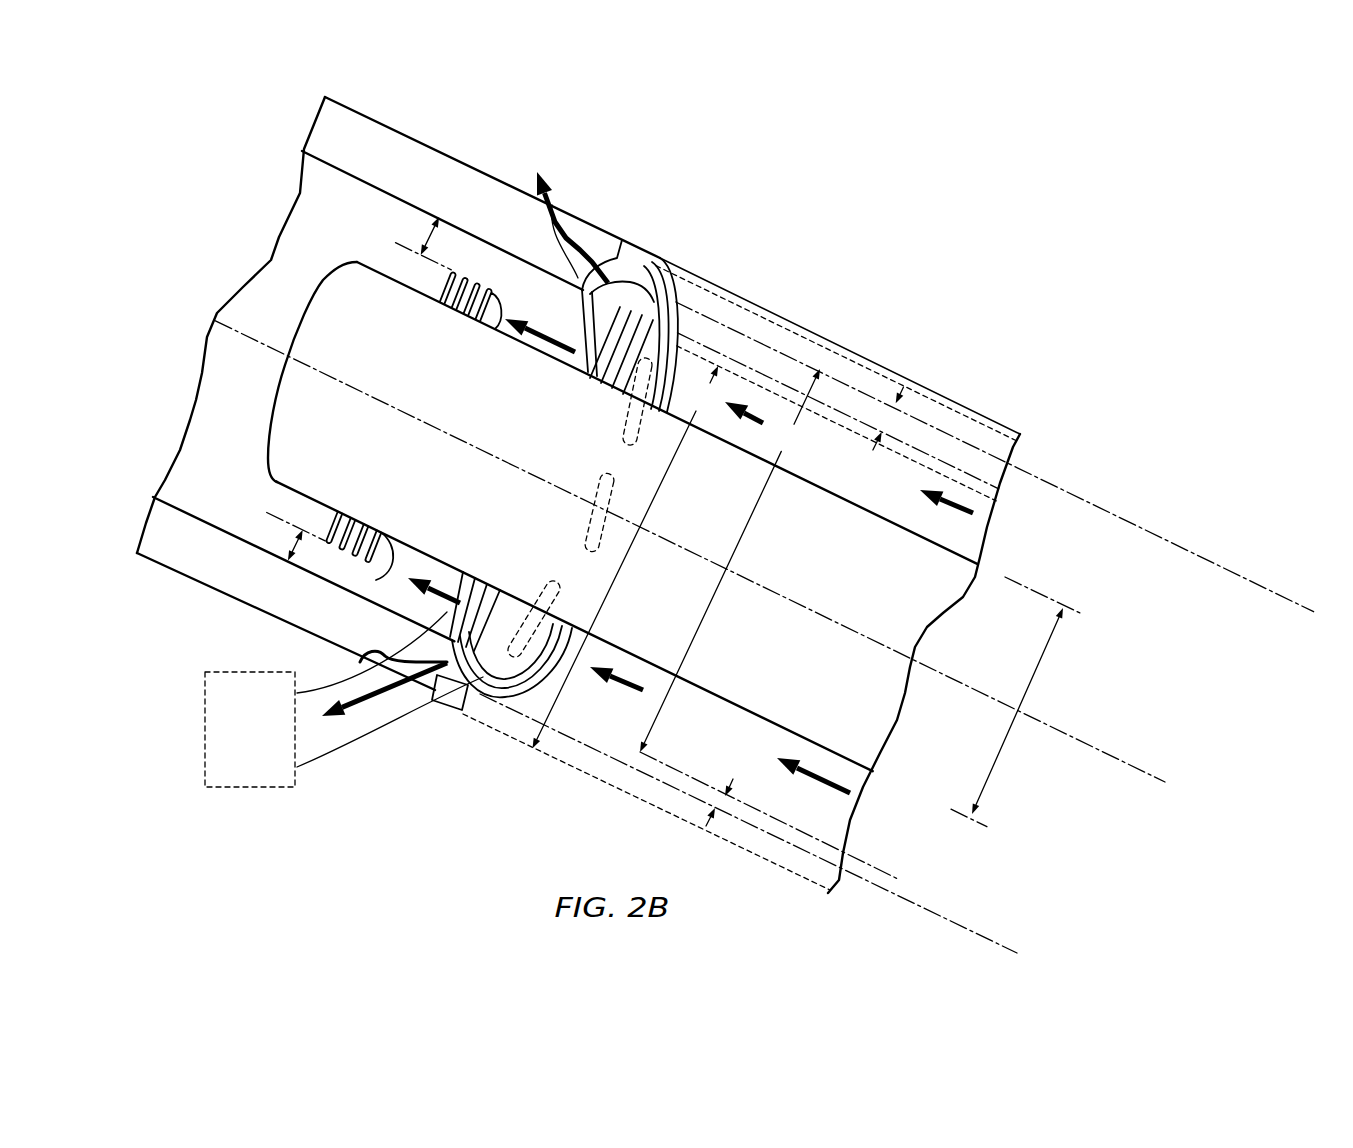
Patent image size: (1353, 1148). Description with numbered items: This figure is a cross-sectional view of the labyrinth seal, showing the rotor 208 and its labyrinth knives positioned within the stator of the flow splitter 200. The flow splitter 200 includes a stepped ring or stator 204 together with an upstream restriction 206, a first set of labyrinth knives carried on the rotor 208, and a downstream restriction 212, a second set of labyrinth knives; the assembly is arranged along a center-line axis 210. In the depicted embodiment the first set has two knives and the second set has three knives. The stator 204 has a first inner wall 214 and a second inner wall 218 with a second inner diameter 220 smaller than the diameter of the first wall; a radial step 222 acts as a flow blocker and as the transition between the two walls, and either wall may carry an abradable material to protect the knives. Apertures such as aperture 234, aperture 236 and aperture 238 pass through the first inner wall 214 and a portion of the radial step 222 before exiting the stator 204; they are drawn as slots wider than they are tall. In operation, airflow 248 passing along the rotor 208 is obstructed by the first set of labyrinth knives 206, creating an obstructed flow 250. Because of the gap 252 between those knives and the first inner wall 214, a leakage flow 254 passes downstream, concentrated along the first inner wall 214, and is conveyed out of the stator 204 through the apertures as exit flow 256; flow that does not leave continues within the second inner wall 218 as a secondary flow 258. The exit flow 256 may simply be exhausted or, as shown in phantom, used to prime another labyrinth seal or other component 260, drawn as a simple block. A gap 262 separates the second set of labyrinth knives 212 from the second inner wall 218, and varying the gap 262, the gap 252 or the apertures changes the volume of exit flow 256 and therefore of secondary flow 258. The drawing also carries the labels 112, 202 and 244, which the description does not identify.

The panel 112 is at (457, 521).
The flow splitter 200 is at (721, 294).
The structure 202 is at (975, 255).
The stepped ring 204 is at (512, 186).
The upstream restriction 206 is at (525, 650).
The rotor 208 is at (907, 527).
The center-line axis 210 is at (1057, 727).
The downstream restriction 212 is at (343, 582).
The first inner wall 214 is at (500, 697).
The second inner wall 218 is at (318, 239).
The second inner diameter 220 is at (627, 557).
The radial step 222 is at (655, 250).
The aperture 234 is at (660, 384).
The aperture 236 is at (587, 488).
The aperture 238 is at (553, 655).
The width 244 is at (974, 811).
The airflow 248 is at (972, 512).
The obstructed flow 250 is at (753, 418).
The gap 252 is at (805, 606).
The leakage flow 254 is at (686, 312).
The exit flow 256 is at (556, 205).
The secondary flow 258 is at (533, 332).
The other component 260 is at (344, 699).
The gap 262 is at (433, 216).